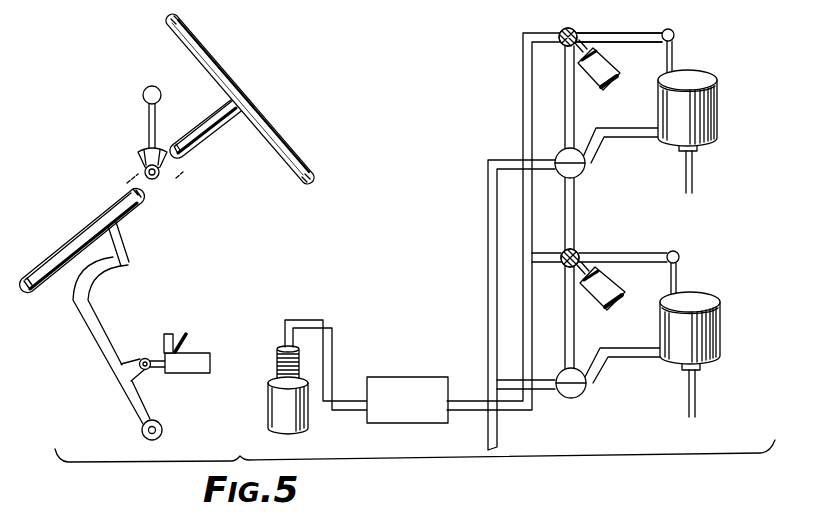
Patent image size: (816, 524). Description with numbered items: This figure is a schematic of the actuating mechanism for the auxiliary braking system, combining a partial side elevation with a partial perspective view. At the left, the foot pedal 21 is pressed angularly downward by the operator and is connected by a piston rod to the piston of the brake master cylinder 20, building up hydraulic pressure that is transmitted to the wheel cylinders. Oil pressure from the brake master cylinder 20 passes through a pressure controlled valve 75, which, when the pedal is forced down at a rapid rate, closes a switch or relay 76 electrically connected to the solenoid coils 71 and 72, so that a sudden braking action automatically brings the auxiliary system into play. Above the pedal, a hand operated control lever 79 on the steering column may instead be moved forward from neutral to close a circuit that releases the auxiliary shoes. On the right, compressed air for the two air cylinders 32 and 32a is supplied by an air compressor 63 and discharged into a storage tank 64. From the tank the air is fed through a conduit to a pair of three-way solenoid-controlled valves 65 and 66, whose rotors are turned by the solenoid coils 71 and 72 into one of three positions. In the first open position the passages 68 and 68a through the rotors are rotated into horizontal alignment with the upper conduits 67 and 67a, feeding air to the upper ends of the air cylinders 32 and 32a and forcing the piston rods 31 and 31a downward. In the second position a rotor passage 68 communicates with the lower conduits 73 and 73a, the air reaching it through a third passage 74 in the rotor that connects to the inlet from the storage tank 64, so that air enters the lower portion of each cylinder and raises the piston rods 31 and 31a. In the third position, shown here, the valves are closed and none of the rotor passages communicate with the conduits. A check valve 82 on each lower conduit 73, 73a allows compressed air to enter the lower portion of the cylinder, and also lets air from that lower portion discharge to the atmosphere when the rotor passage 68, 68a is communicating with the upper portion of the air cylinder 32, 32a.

The brake master cylinder 20 is at (211, 362).
The foot pedal 21 is at (136, 414).
The piston rod 31 is at (697, 395).
The piston rod 31a is at (694, 190).
The air cylinder 32 is at (721, 322).
The air cylinder 32a is at (718, 103).
The air compressor 63 is at (306, 425).
The storage tank 64 is at (395, 378).
The three-way solenoid-controlled valve 65 is at (580, 252).
The three-way solenoid-controlled valve 66 is at (581, 35).
The upper conduit 67 is at (642, 254).
The upper conduit 67a is at (651, 40).
The valve rotor passage 68 is at (565, 47).
The valve rotor passage 68a is at (580, 30).
The solenoid coil 71 is at (608, 283).
The solenoid coil 72 is at (592, 85).
The lower conduit 73 is at (566, 333).
The lower conduit 73a is at (565, 93).
The third passage 74 is at (560, 31).
The pressure controlled valve 75 is at (163, 338).
The switch or relay 76 is at (188, 335).
The hand operated control lever 79 is at (157, 114).
The check valve 82 is at (560, 177).